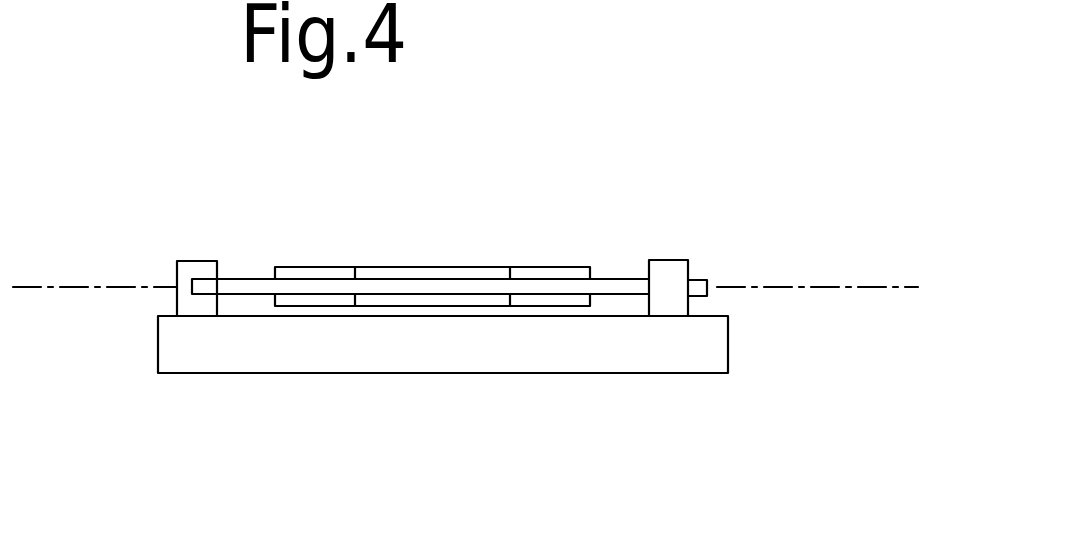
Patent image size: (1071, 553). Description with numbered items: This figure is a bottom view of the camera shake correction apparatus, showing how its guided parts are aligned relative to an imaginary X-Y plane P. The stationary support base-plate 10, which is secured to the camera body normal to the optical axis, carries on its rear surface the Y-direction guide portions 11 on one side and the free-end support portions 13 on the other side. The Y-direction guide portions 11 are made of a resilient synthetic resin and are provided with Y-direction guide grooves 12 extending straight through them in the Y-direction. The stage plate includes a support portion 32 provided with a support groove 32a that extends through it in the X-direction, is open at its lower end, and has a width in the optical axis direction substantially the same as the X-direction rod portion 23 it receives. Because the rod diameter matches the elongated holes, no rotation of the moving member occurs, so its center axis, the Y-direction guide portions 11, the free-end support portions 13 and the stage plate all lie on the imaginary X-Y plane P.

The stationary support base-plate 10 is at (707, 350).
The Y-direction guide portion 11 is at (198, 273).
The Y-direction guide groove 12 is at (182, 287).
The free-end support portion 13 is at (672, 272).
The X-direction rod portion 23 is at (625, 297).
The support portion 32 is at (462, 297).
The support groove 32a is at (388, 293).
The imaginary X-Y plane P is at (823, 287).